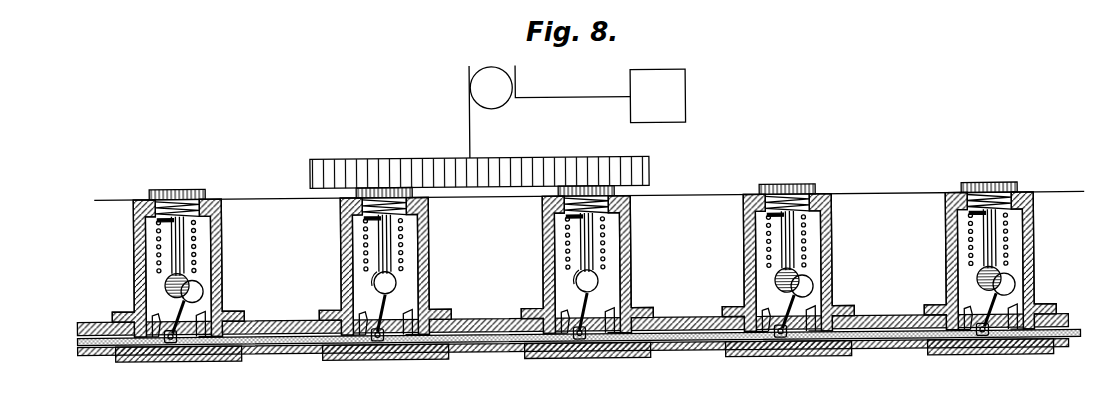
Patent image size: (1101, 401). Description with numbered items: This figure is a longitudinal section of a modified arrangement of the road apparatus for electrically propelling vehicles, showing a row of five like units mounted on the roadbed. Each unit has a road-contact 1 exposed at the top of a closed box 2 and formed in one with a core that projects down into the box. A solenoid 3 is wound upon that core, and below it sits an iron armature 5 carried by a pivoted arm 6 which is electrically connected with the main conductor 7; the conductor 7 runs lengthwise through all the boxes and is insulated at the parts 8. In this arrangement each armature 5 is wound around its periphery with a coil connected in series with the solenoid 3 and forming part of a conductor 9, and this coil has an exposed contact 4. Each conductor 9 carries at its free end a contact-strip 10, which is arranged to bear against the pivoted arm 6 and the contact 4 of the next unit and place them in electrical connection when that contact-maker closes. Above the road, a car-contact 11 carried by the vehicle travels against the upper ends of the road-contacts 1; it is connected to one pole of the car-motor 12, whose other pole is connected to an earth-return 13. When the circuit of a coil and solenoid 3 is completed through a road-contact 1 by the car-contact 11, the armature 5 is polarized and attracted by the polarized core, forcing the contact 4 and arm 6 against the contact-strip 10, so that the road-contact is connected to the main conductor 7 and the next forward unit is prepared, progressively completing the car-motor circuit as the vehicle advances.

The road-contact 1 is at (583, 191).
The closed box 2 is at (583, 265).
The solenoid 3 is at (601, 243).
The contact 4 is at (573, 310).
The armature 5 is at (616, 285).
The pivoted arm 6 is at (590, 326).
The main conductor 7 is at (900, 348).
The insulated parts 8 is at (671, 344).
The conductor 9 is at (1067, 318).
The contact-strip 10 is at (542, 316).
The car-contact 11 is at (415, 166).
The car-motor 12 is at (550, 111).
The earth-return 13 is at (657, 95).